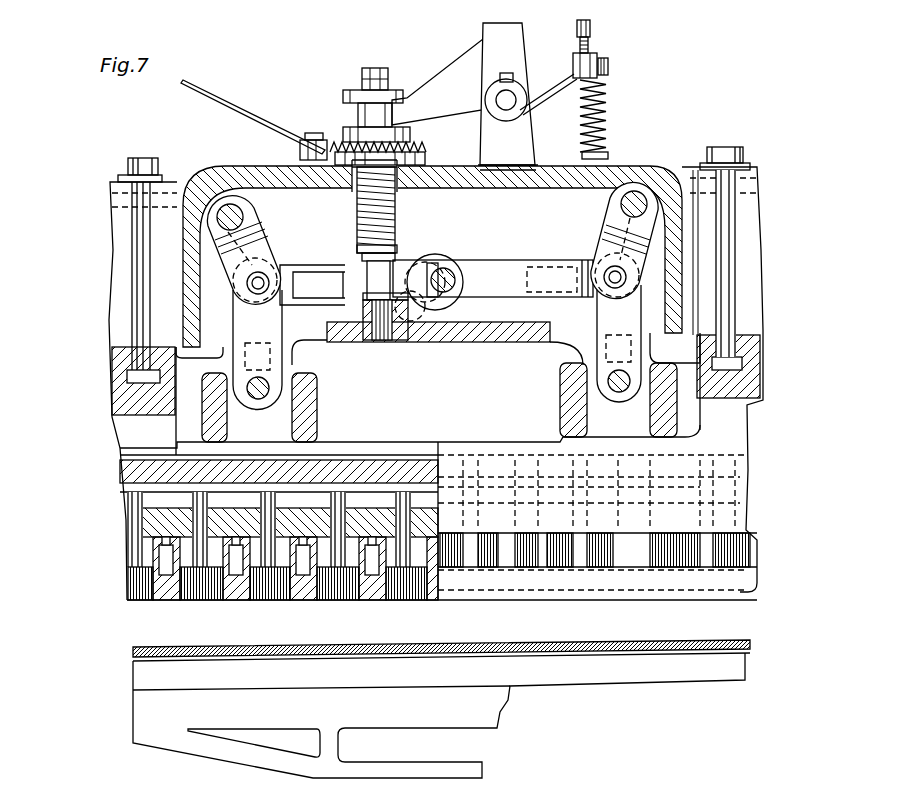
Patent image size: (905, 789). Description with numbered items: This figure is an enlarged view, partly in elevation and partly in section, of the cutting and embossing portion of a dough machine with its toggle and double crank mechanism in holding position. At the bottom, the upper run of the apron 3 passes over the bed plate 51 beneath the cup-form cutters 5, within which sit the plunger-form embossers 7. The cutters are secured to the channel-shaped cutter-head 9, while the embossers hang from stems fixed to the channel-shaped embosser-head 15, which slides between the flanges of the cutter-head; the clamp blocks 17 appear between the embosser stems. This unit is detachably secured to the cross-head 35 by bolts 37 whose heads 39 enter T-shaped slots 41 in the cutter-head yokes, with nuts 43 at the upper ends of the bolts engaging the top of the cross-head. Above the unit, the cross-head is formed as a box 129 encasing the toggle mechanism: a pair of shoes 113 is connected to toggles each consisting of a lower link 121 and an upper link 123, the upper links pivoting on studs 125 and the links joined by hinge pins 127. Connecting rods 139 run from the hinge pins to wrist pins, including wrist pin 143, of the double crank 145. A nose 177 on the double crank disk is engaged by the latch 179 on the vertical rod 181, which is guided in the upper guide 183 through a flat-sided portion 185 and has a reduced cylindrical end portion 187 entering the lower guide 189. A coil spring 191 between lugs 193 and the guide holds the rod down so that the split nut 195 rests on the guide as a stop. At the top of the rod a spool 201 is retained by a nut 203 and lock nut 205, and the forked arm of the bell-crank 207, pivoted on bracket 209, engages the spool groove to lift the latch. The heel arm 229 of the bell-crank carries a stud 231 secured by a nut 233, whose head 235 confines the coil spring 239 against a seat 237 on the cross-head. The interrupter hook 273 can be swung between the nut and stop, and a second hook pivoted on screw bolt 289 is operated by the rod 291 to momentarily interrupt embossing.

The apron 3 is at (172, 645).
The cutters 5 is at (313, 577).
The embossers 7 is at (267, 595).
The cutter-head 9 is at (150, 525).
The embosser-head 15 is at (127, 478).
The clamp block 17 is at (170, 600).
The cross-head 35 is at (490, 342).
The bolts 37 is at (137, 256).
The heads 39 is at (127, 376).
The T-shaped slots 41 is at (118, 397).
The nuts 43 is at (128, 165).
The bed plate 51 is at (145, 718).
The shoes 113 is at (318, 410).
The lower link 121 is at (278, 325).
The upper link 123 is at (250, 240).
The studs 125 is at (244, 217).
The hinge pins 127 is at (247, 285).
The box 129 is at (520, 205).
The connecting rods 139 is at (295, 265).
The wrist pin 143 is at (458, 280).
The double crank 145 is at (437, 257).
The nose 177 is at (433, 342).
The latch 179 is at (395, 342).
The vertical rod 181 is at (397, 245).
The upper guide 183 is at (400, 170).
The flat-sided portion 185 is at (397, 190).
The reduced cylindrical end portion 187 is at (380, 343).
The guide 189 is at (372, 313).
The coil spring 191 is at (360, 223).
The lugs 193 is at (362, 246).
The split nut 195 is at (408, 142).
The spool 201 is at (400, 96).
The nut 203 is at (353, 92).
The lock nut 205 is at (364, 68).
The bell-crank 207 is at (490, 47).
The bracket 209 is at (523, 140).
The heel arm 229 is at (608, 62).
The stud 231 is at (588, 27).
The nut 233 is at (600, 57).
The head 235 is at (600, 78).
The spring seat 237 is at (610, 153).
The coil spring 239 is at (607, 117).
The hook 273 is at (480, 167).
The screw bolt 289 is at (337, 140).
The rod 291 is at (247, 115).